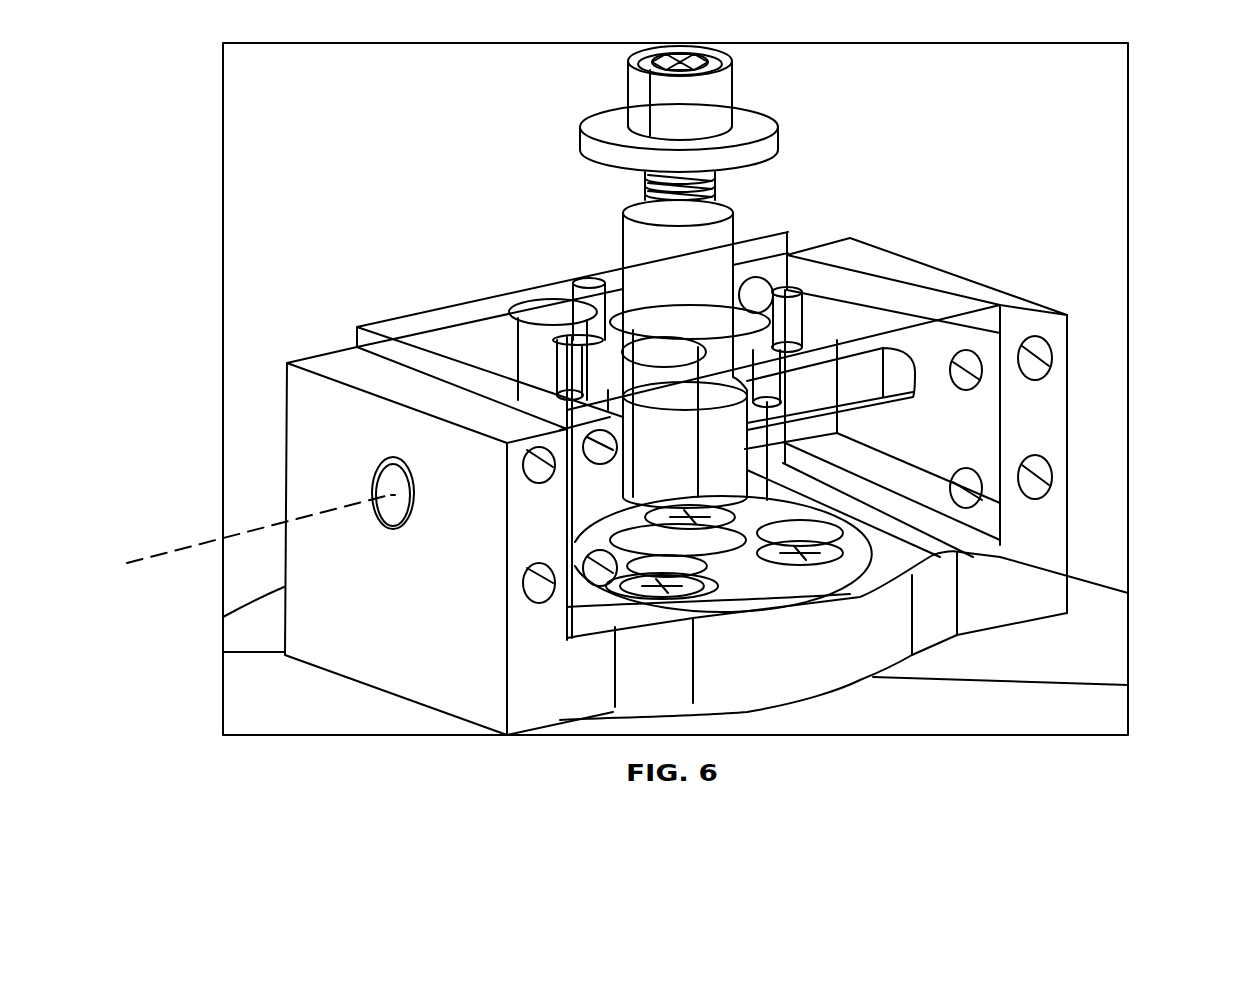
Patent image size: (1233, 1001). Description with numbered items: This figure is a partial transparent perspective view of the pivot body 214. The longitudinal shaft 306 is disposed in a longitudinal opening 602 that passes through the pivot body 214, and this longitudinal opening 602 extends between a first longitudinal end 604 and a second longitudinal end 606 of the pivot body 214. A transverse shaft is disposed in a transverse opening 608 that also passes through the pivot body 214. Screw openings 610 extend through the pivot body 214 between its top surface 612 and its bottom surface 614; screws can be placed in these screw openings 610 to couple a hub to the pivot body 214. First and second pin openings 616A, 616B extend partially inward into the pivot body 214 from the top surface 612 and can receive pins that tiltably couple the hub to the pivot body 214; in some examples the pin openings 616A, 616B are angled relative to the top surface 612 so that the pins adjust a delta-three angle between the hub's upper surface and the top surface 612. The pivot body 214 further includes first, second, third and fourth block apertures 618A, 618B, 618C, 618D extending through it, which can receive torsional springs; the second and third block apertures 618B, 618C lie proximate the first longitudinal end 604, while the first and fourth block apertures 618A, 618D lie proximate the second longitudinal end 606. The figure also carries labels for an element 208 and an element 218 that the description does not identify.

The base plate 208 is at (245, 602).
The pivot body 214 is at (428, 310).
The axis 218 is at (207, 540).
The longitudinal shaft 306 is at (870, 357).
The longitudinal opening 602 is at (910, 377).
The first longitudinal end 604 is at (412, 342).
The second longitudinal end 606 is at (975, 293).
The transverse opening 608 is at (734, 305).
The screw openings 610 is at (583, 280).
The top surface 612 is at (796, 245).
The bottom surface 614 is at (990, 560).
The first pin openings 616A is at (523, 310).
The second pin openings 616B is at (757, 335).
The first block aperture 618A is at (580, 596).
The second block aperture 618B is at (960, 396).
The third block aperture 618C is at (960, 510).
The fourth block aperture 618D is at (590, 478).